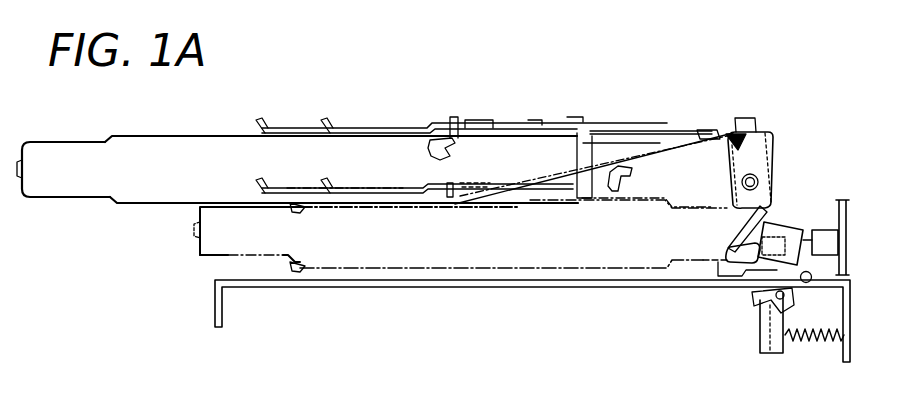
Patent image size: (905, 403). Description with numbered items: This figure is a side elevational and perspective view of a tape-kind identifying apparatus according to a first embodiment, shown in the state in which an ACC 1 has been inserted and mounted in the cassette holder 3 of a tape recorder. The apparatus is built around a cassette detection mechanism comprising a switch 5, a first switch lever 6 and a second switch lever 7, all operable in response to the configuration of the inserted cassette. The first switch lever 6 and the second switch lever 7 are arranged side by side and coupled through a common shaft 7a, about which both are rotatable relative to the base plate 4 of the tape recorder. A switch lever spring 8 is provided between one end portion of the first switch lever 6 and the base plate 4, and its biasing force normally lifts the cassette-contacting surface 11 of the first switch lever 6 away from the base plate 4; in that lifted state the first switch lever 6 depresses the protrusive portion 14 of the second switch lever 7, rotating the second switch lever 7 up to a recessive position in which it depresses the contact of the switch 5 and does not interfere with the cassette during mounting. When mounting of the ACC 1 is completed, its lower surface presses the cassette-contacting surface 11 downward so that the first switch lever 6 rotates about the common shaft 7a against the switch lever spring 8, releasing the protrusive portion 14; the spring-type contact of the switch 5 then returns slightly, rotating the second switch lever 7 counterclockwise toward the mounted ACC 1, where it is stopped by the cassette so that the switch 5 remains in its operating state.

The ACC 1 is at (135, 134).
The cassette holder 3 is at (353, 130).
The base plate 4 is at (430, 287).
The switch 5 is at (838, 238).
The first switch lever 6 is at (763, 347).
The second switch lever 7 is at (783, 231).
The common shaft 7a is at (770, 303).
The switch lever spring 8 is at (822, 343).
The cassette-contacting surface 11 is at (763, 217).
The protrusive portion 14 is at (811, 276).